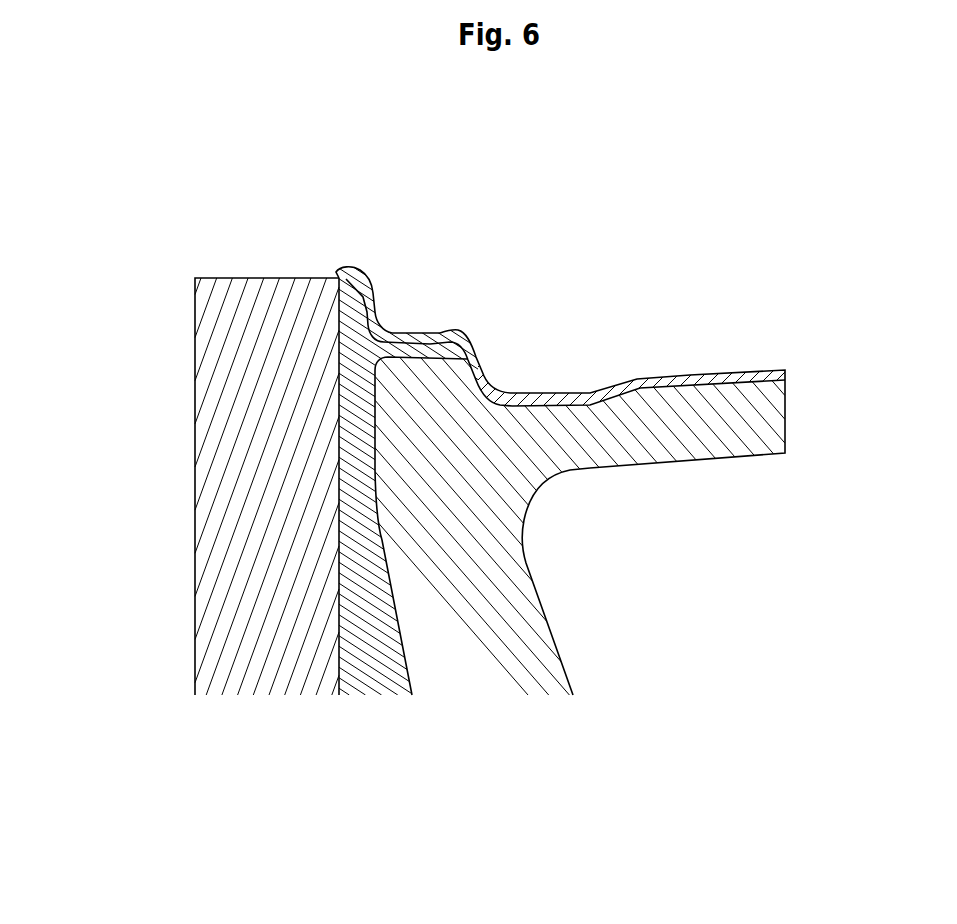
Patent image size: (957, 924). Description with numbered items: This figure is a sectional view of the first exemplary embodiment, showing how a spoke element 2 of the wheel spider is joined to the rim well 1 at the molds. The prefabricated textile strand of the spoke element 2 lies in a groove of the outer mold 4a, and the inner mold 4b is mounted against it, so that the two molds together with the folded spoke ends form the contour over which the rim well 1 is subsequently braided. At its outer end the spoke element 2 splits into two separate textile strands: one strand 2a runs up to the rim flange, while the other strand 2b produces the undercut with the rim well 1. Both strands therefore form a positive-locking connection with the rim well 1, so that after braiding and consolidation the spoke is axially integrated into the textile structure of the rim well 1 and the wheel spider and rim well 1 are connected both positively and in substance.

The rim well 1 is at (738, 372).
The spoke element 2 is at (440, 443).
The spoke end running up to the rim flange 2a is at (347, 293).
The spoke end producing the undercut 2b is at (425, 350).
The outer mold 4a is at (280, 678).
The inner mold 4b is at (475, 673).